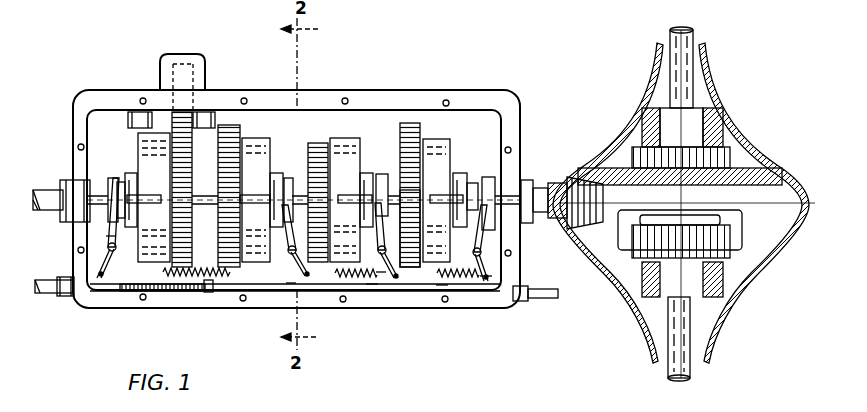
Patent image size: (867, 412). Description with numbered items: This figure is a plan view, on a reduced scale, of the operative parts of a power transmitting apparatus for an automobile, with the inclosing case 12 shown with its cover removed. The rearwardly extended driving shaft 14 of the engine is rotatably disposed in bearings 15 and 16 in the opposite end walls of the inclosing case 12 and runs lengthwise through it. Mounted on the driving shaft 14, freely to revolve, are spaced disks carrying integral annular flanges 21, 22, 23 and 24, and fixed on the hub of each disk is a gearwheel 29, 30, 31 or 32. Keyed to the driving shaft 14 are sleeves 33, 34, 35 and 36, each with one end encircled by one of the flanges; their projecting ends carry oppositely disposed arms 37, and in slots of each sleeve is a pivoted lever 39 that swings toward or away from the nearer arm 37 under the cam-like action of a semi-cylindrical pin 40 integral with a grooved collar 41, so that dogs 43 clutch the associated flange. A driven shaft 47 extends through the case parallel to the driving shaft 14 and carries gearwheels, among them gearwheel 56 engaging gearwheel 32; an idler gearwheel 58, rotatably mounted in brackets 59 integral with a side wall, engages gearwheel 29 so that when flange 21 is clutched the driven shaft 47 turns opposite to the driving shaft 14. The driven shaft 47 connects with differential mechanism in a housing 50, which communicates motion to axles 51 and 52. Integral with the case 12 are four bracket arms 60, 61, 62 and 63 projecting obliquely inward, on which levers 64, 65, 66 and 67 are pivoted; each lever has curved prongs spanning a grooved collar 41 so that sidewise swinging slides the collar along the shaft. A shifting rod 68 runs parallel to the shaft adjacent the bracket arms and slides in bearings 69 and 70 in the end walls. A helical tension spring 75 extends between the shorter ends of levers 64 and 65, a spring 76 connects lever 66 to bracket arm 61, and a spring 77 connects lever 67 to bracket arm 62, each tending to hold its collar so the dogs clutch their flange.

The inclosing case 12 is at (398, 307).
The driving shaft 14 is at (48, 190).
The bearing 15 is at (65, 179).
The bearing 16 is at (527, 180).
The annular flange 21 is at (167, 150).
The annular flange 22 is at (266, 146).
The annular flange 23 is at (350, 147).
The annular flange 24 is at (442, 147).
The gearwheel 29 is at (193, 172).
The gearwheel 30 is at (240, 131).
The gearwheel 31 is at (318, 146).
The gearwheel 32 is at (412, 198).
The sleeve 33 is at (123, 182).
The sleeve 34 is at (277, 277).
The sleeve 35 is at (375, 284).
The sleeve 36 is at (440, 286).
The arm 37 is at (284, 236).
The lever 39 is at (140, 163).
The semi-cylindrical pin 40 is at (470, 183).
The grooved collar 41 is at (113, 178).
The dog 43 is at (148, 195).
The driven shaft 47 is at (556, 184).
The housing 50 is at (626, 128).
The axle 51 is at (694, 38).
The axle 52 is at (692, 378).
The gearwheel 56 is at (410, 124).
The idler gearwheel 58 is at (190, 112).
The bracket 59 is at (137, 112).
The bracket arm 60 is at (118, 265).
The bracket arm 61 is at (290, 262).
The bracket arm 62 is at (382, 258).
The bracket arm 63 is at (480, 270).
The lever 64 is at (110, 237).
The lever 65 is at (287, 284).
The lever 66 is at (380, 274).
The lever 67 is at (487, 276).
The shifting rod 68 is at (50, 280).
The bearing 69 is at (70, 296).
The bearing 70 is at (525, 305).
The helical tension spring 75 is at (193, 270).
The helical tension spring 76 is at (338, 285).
The helical spring 77 is at (462, 285).